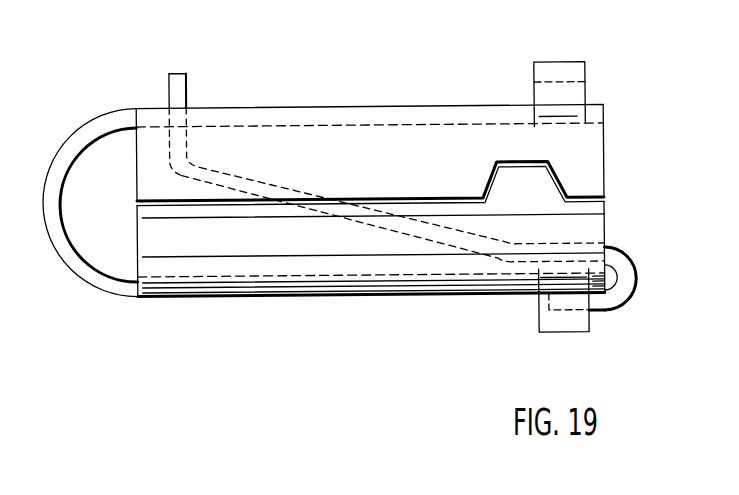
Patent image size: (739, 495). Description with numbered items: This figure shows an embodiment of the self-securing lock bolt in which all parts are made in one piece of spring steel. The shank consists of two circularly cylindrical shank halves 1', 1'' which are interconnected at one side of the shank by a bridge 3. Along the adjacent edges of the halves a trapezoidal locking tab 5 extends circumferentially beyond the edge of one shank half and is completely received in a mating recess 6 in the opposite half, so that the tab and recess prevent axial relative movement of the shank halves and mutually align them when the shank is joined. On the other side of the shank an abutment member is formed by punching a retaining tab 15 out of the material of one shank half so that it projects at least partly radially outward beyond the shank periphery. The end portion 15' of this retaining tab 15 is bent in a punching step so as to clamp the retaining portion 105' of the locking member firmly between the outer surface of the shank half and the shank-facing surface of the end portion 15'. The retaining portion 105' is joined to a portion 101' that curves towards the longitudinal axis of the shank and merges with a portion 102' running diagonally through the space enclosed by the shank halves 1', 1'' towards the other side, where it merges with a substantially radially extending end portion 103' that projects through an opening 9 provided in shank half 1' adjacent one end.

The shank half 1' is at (370, 127).
The shank half 1'' is at (371, 273).
The bridge 3 is at (69, 251).
The locking tab 5 is at (543, 188).
The recess 6 is at (543, 161).
The opening 9 is at (163, 121).
The retaining tab 15 is at (526, 205).
The end portion of retaining tab 15' is at (561, 199).
The curved portion of locking member 101' is at (647, 278).
The diagonal portion of locking member 102' is at (392, 201).
The end portion of locking member 103' is at (210, 117).
The retaining portion of locking member 105' is at (624, 318).